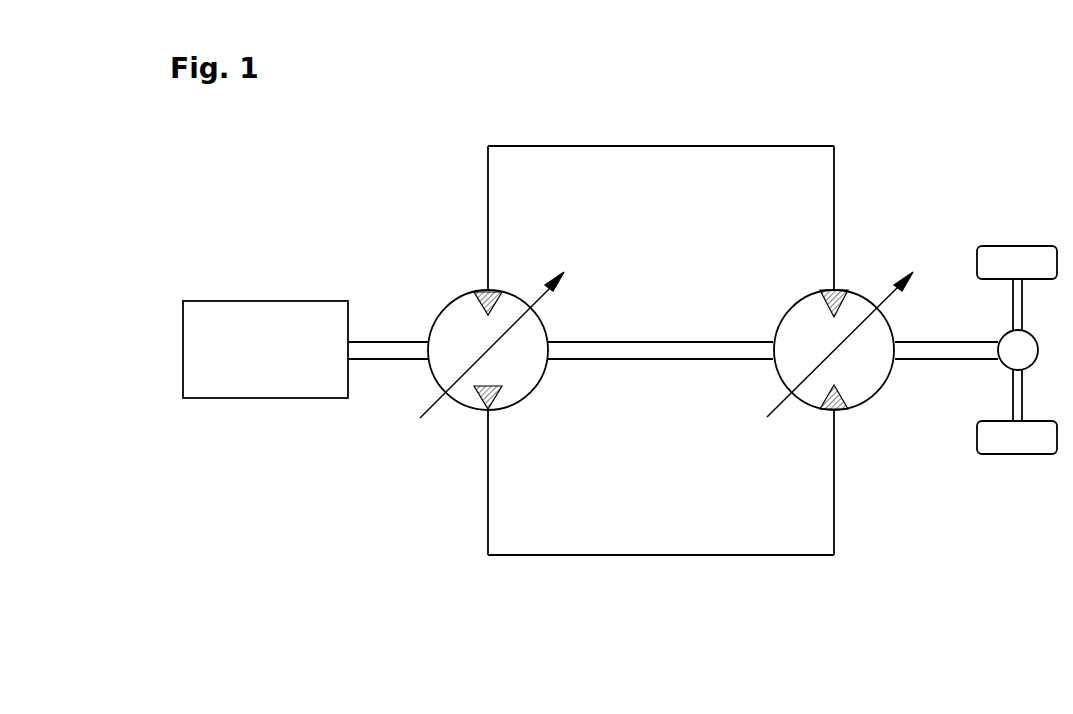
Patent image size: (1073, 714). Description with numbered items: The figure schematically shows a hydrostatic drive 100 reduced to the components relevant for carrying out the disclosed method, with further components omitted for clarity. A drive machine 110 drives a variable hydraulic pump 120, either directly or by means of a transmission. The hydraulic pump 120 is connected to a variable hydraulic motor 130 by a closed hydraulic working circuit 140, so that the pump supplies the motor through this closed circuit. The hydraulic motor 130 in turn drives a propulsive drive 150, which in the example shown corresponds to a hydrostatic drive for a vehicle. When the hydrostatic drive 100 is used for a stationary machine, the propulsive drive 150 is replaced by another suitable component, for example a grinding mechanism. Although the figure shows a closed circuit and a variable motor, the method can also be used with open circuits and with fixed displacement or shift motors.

The hydrostatic drive 100 is at (973, 131).
The drive machine 110 is at (265, 399).
The variable hydraulic pump 120 is at (531, 393).
The variable hydraulic motor 130 is at (877, 393).
The closed hydraulic working circuit 140 is at (651, 145).
The propulsive drive 150 is at (1010, 472).